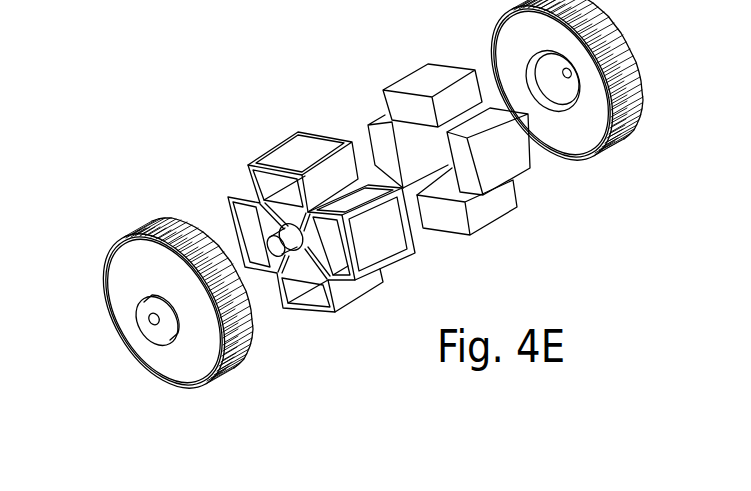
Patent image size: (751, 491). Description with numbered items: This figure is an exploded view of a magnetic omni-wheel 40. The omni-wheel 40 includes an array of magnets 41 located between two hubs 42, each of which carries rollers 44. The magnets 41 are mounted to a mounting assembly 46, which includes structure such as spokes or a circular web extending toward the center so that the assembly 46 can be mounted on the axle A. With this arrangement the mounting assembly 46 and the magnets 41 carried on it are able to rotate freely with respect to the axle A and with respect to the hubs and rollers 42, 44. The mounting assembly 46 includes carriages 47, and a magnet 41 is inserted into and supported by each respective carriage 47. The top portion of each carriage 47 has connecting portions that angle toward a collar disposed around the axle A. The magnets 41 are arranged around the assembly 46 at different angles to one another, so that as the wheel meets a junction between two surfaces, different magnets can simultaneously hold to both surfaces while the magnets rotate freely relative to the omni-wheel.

The omni-wheel 40 is at (168, 168).
The magnets 41 is at (438, 65).
The hubs 42 is at (125, 256).
The rollers 44 is at (636, 54).
The mounting assembly 46 is at (258, 117).
The carriages 47 is at (318, 133).
The axle A is at (276, 257).